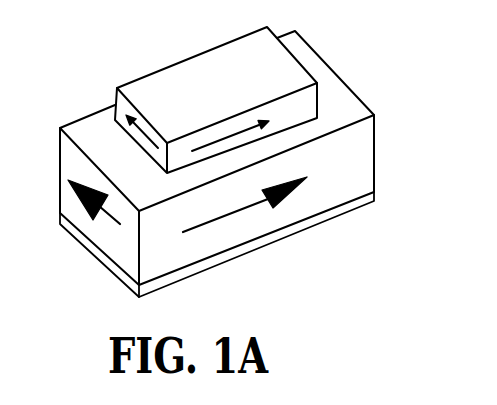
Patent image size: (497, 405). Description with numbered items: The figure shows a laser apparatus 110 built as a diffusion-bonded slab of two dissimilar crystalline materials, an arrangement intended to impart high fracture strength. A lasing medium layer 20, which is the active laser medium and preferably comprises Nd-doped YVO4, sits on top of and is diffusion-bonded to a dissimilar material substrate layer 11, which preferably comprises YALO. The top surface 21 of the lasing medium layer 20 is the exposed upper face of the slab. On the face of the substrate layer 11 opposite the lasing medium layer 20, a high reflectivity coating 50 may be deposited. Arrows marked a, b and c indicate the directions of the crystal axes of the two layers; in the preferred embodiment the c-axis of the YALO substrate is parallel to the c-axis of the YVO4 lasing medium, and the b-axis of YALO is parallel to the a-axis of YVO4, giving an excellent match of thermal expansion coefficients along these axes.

The laser apparatus 110 is at (96, 279).
The substrate layer 11 is at (357, 179).
The lasing medium layer 20 is at (115, 102).
The top surface 21 is at (205, 68).
The high reflectivity coating 50 is at (297, 228).